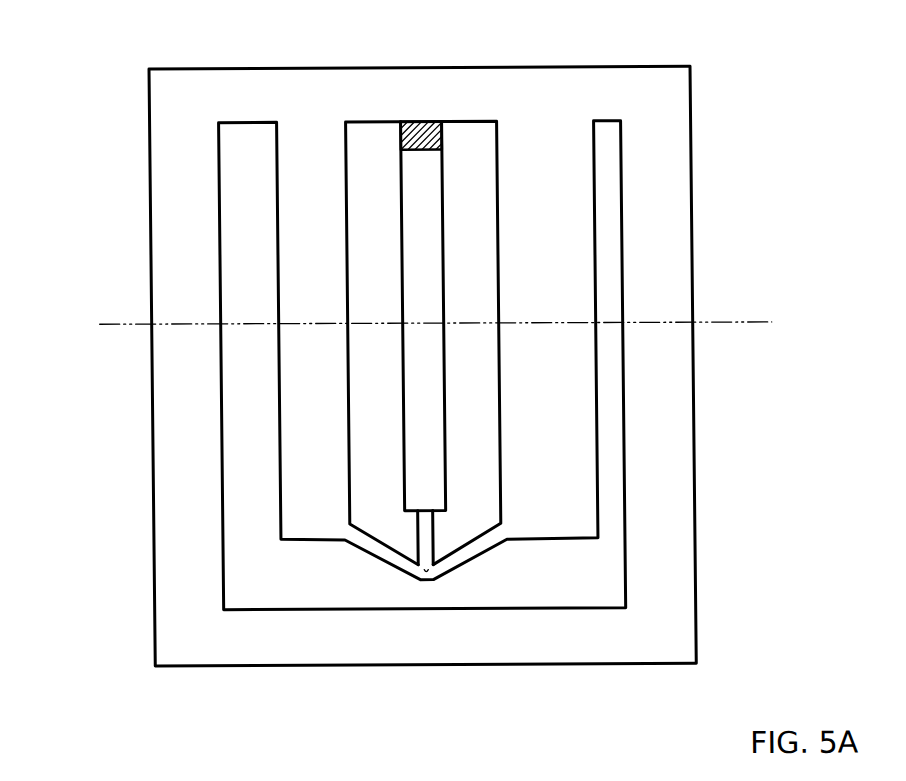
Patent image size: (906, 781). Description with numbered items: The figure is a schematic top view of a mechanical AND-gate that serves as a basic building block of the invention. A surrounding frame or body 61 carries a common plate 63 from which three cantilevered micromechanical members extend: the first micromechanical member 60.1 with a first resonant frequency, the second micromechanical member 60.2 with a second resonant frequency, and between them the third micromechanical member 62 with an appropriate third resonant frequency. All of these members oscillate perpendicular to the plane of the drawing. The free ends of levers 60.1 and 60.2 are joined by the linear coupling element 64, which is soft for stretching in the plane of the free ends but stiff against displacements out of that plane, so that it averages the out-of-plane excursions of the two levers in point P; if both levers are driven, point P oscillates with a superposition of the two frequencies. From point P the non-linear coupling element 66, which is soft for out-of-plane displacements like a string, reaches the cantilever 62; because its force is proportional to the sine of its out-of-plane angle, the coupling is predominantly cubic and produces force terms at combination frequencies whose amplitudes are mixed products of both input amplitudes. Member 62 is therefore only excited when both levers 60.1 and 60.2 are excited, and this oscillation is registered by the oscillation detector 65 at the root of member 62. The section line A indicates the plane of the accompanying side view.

The housing body 61 is at (652, 120).
The third micromechanical member 62 is at (417, 316).
The yoke plate with V-notch 63 is at (240, 573).
The linear coupling element 64 is at (365, 559).
The oscillation detector 65 is at (424, 124).
The non-linear coupling element 66 is at (422, 534).
The first micromechanical member 60.1 is at (303, 409).
The second micromechanical member 60.2 is at (556, 428).
The point P is at (412, 584).
The section line A-A' A is at (437, 313).